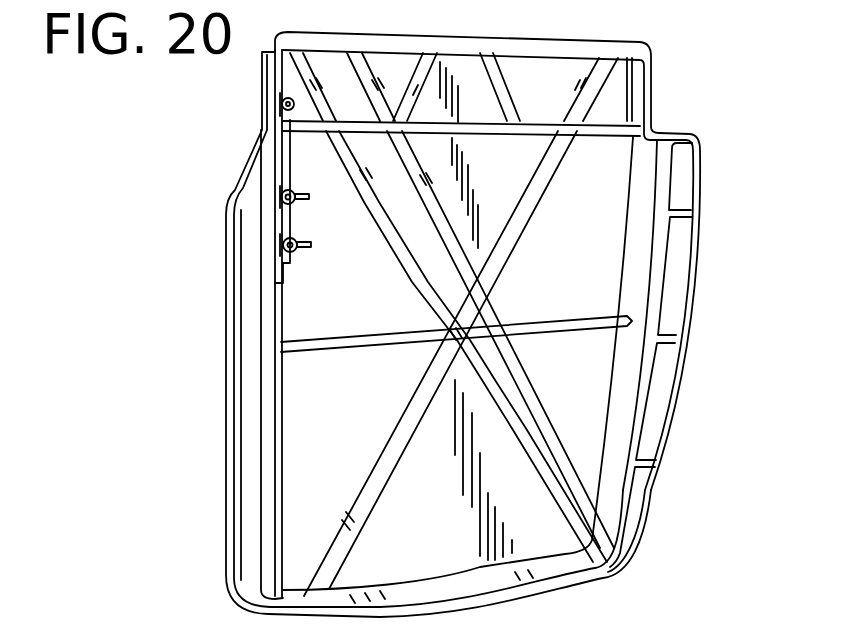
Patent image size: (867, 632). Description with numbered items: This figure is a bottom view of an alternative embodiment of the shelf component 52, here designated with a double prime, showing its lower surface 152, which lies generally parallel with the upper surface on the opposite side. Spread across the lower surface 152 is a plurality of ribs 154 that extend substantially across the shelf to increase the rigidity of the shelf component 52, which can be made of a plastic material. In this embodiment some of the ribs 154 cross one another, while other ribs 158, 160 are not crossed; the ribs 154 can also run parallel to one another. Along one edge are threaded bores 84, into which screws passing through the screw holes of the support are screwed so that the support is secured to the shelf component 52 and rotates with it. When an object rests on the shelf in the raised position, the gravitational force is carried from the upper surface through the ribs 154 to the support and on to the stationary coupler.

The shelf component 52 is at (624, 30).
The threaded bores 84 is at (283, 100).
The lower surface 152 is at (587, 383).
The ribs 154 is at (467, 137).
The rib 158 is at (640, 510).
The rib 160 is at (590, 497).